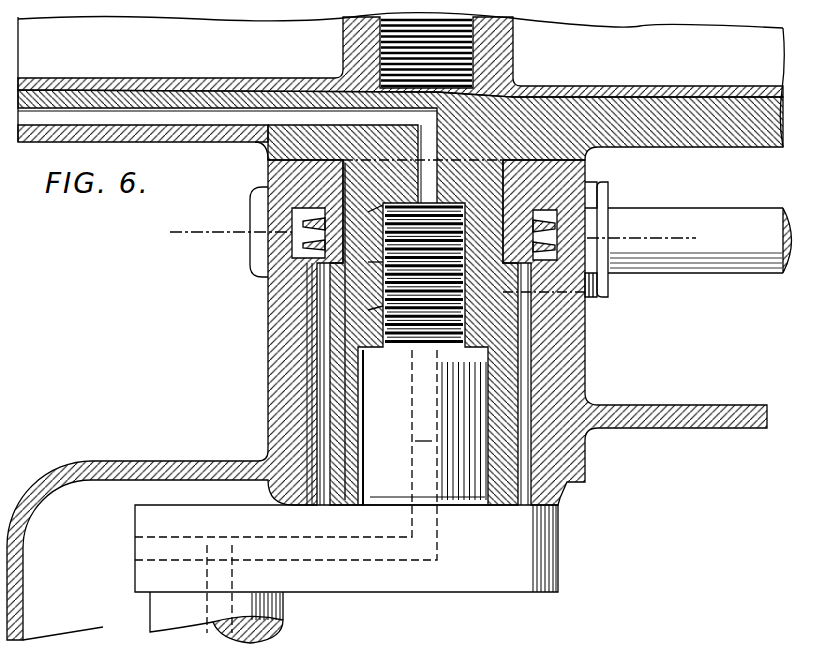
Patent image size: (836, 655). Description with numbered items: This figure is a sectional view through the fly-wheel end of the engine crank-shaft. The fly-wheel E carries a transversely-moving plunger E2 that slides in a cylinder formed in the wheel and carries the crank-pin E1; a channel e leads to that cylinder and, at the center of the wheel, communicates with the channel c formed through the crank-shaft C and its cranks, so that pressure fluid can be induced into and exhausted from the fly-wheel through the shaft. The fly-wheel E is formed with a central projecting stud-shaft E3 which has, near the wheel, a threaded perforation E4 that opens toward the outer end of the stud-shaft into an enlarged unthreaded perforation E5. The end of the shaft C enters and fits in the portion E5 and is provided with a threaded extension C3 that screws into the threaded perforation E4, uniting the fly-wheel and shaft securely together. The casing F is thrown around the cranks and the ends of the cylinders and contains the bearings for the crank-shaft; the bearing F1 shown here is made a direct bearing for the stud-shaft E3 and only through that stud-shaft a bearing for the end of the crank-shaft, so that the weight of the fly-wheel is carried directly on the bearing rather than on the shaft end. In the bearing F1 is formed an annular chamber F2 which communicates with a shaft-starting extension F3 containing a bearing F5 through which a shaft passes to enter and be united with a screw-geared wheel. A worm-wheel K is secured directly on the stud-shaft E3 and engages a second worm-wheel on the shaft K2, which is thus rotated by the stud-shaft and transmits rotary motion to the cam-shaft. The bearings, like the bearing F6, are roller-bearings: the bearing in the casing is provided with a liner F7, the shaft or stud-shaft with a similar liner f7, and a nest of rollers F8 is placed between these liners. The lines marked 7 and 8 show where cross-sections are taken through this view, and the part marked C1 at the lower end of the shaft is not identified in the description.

The fly-wheel E is at (400, 297).
The crank-pin E1 is at (452, 50).
The transversely-moving plunger E2 is at (158, 76).
The channel e is at (227, 153).
The stud-shaft E3 is at (367, 265).
The threaded perforation E4 is at (367, 310).
The enlarged unthreaded perforation E5 is at (358, 421).
The casing F is at (23, 560).
The bearing F1 is at (527, 360).
The annular chamber F2 is at (585, 207).
The shaft-starting extension F3 is at (598, 298).
The bearing F5 is at (608, 282).
The bearing F6 is at (320, 342).
The liner F7 is at (560, 380).
The nest of rollers F8 is at (527, 345).
The liner f7 is at (520, 320).
The worm-wheel K is at (293, 245).
The shaft K2 is at (700, 240).
The crank-shaft C is at (424, 356).
The base C1 is at (280, 613).
The threaded extension C3 is at (365, 214).
The channel c is at (195, 610).
The section line 7 is at (430, 236).
The section line 8 is at (380, 393).